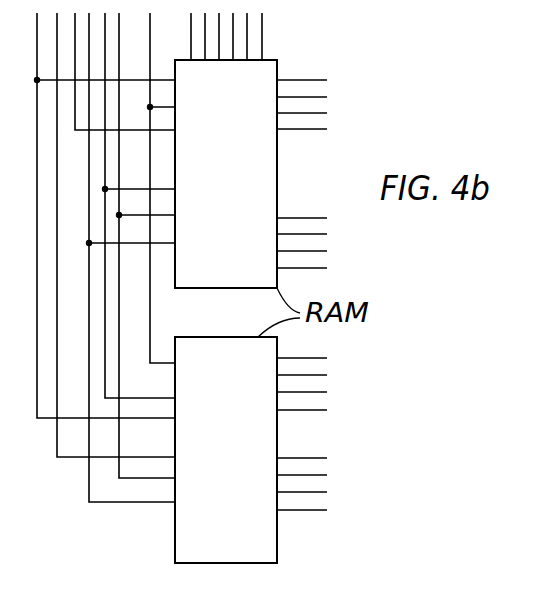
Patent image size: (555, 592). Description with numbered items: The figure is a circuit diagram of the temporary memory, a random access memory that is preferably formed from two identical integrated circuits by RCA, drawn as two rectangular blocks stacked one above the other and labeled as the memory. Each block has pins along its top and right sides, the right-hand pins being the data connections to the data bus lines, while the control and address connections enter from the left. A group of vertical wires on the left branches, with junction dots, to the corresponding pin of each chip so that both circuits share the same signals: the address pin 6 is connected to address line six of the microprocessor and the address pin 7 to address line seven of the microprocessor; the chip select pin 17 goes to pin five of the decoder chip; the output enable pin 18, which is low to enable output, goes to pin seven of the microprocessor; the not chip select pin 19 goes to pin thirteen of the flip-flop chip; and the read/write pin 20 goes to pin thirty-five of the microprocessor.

The read/write pin 20 is at (121, 222).
The not chip select pin 19 is at (177, 194).
The output enable pin 18 is at (132, 239).
The address pin MA7 7 is at (149, 209).
The address pin MA6 6 is at (156, 251).
The chip select pin 17 is at (147, 265).